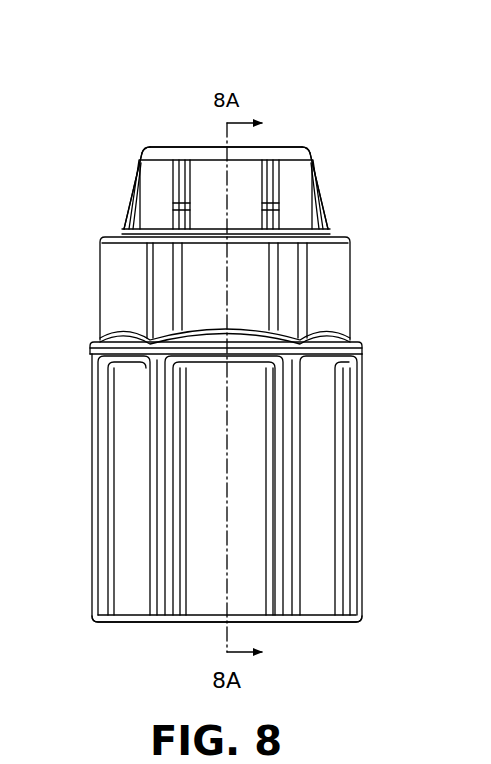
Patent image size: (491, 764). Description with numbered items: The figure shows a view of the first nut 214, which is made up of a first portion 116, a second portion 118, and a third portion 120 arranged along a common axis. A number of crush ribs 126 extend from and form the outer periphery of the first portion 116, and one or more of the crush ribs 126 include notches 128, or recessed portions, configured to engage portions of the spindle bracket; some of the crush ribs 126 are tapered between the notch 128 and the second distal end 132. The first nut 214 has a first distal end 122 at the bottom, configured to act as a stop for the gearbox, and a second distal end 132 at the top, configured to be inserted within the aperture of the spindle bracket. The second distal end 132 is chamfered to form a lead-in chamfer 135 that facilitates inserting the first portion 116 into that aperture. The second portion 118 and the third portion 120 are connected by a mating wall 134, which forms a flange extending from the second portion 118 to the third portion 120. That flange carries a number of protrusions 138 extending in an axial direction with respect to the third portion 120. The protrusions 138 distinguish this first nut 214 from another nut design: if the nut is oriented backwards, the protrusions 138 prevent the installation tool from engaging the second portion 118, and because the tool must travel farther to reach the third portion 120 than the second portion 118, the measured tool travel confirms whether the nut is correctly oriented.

The first nut 214 is at (128, 42).
The first portion 116 is at (120, 222).
The second portion 118 is at (96, 303).
The third portion 120 is at (88, 450).
The first distal end 122 is at (137, 622).
The crush ribs 126 is at (140, 160).
The notches 128 is at (128, 200).
The second distal end 132 is at (200, 147).
The mating wall 134 is at (364, 340).
The lead-in chamfer 135 is at (147, 160).
The protrusions 138 is at (126, 333).